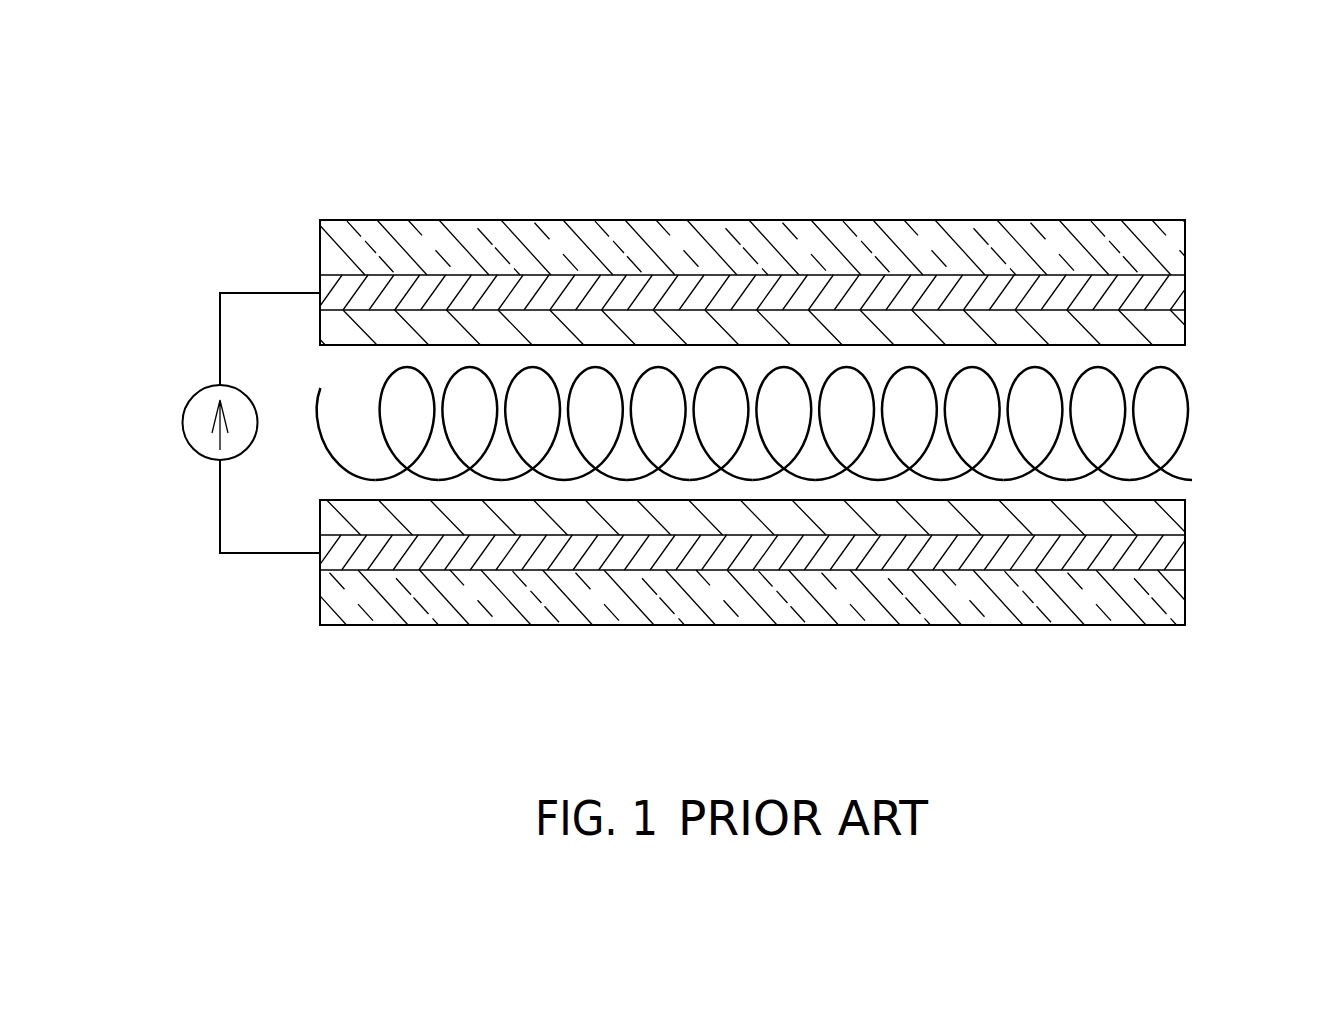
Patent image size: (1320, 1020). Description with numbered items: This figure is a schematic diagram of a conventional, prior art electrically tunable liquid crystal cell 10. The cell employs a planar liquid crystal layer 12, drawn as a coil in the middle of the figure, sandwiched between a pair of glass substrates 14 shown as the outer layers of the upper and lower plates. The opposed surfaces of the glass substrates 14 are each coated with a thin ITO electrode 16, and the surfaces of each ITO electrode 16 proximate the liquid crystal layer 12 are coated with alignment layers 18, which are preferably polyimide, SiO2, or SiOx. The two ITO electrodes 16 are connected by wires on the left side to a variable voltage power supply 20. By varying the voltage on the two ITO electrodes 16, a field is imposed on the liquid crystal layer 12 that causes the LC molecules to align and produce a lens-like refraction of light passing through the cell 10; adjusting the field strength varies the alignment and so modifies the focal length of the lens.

The electrically tunable liquid crystal cell 10 is at (1178, 160).
The liquid crystal layer 12 is at (1183, 407).
The glass substrates 14 is at (970, 220).
The ITO electrode 16 is at (643, 300).
The alignment layers 18 is at (720, 335).
The variable voltage power supply 20 is at (183, 423).